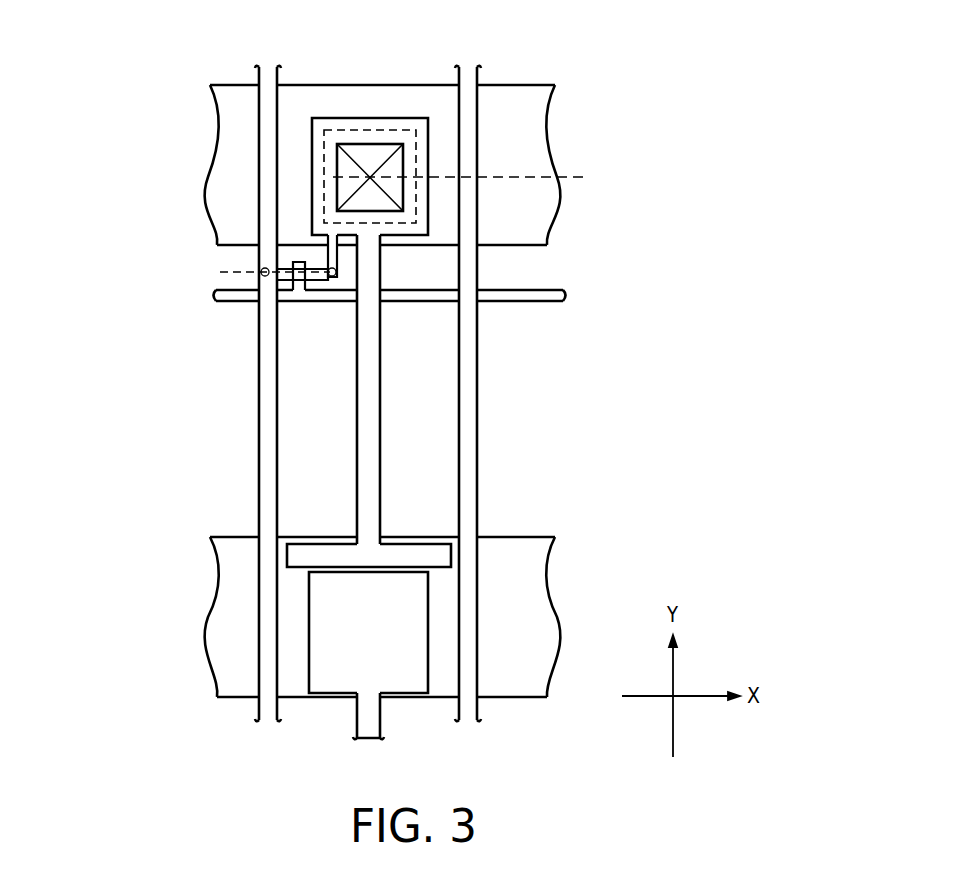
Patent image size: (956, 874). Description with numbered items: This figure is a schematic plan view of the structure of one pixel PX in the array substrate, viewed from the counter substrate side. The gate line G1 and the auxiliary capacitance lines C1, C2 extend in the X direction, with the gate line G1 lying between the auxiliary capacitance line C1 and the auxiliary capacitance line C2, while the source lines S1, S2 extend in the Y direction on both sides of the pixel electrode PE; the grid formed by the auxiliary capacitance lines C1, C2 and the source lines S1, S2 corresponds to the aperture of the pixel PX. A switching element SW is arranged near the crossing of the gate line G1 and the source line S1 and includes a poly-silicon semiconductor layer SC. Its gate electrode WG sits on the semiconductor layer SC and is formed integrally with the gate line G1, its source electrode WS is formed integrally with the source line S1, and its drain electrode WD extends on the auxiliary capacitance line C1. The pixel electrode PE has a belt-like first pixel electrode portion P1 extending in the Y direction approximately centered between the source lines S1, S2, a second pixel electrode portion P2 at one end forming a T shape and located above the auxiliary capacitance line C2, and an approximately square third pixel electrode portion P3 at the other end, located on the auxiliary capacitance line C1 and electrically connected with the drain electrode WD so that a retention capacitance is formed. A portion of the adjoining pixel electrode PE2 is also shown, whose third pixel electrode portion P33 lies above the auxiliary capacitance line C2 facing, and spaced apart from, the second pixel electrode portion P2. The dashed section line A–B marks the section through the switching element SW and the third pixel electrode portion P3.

The pixel PX is at (246, 459).
The source line S1 is at (268, 67).
The source line S2 is at (468, 67).
The auxiliary capacitance line C1 is at (208, 180).
The auxiliary capacitance line C2 is at (208, 613).
The gate line G1 is at (216, 295).
The pixel electrode PE is at (394, 409).
The first pixel electrode portion P1 is at (372, 466).
The second pixel electrode portion P2 is at (425, 548).
The third pixel electrode portion P3 is at (400, 118).
The third pixel electrode portion P33 is at (338, 680).
The pixel electrode PE2 is at (396, 725).
The switching element SW is at (287, 314).
The drain electrode WD is at (338, 270).
The source electrode WS is at (262, 271).
The gate electrode WG is at (300, 260).
The semiconductor layer SC is at (317, 280).
The section line A is at (268, 273).
The section line B is at (470, 176).